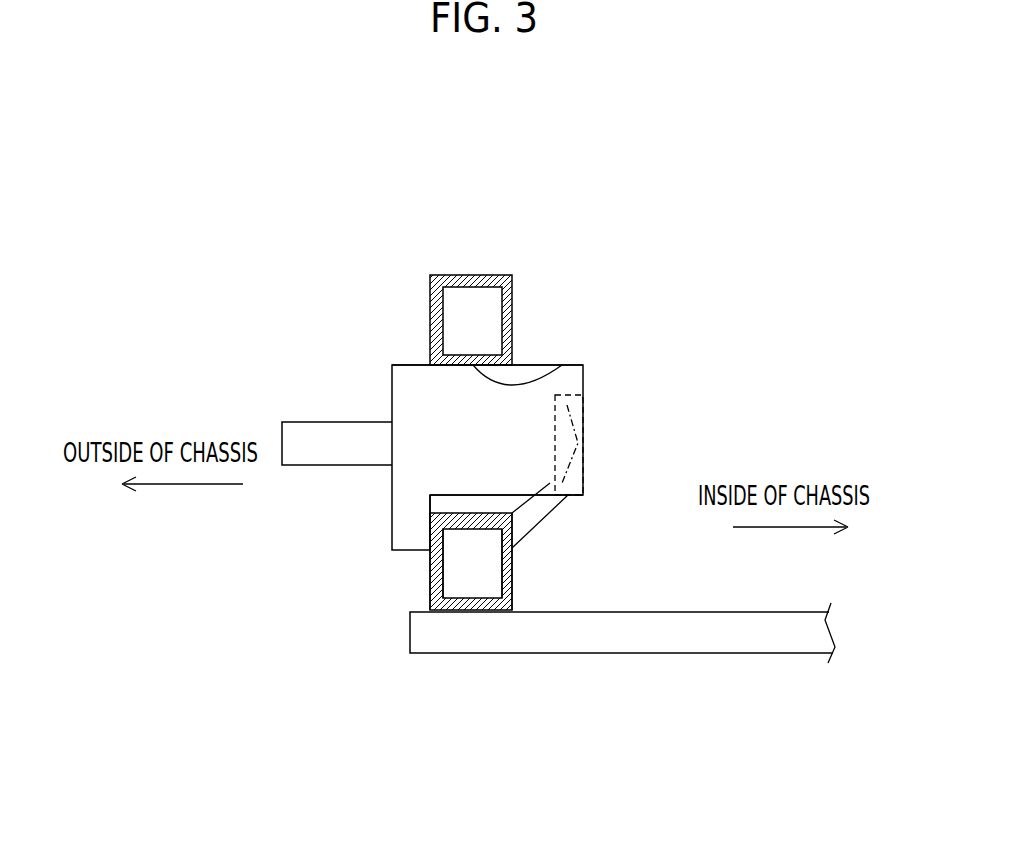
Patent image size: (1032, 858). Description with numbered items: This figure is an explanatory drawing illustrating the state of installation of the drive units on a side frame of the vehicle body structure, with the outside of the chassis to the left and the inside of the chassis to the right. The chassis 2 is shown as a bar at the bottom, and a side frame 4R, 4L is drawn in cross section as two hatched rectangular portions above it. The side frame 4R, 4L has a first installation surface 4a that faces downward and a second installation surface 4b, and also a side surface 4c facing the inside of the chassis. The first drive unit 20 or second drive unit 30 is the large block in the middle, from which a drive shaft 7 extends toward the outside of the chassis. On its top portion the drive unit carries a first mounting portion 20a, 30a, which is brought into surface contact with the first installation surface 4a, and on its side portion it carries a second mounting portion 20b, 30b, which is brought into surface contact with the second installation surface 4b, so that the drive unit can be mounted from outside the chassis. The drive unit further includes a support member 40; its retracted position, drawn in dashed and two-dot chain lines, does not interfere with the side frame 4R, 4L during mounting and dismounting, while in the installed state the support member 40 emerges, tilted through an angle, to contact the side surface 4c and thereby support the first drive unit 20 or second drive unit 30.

The chassis 2 is at (702, 647).
The side frame 4R is at (471, 447).
The side frame 4L is at (472, 275).
The first installation surface 4a is at (562, 365).
The second installation surface 4b is at (447, 534).
The side surface 4c is at (512, 566).
The drive shaft 7 is at (327, 432).
The first drive unit 20 is at (412, 383).
The second drive unit 30 is at (352, 364).
The first mounting portion 20a is at (516, 285).
The first mounting portion 30a is at (527, 365).
The second mounting portion 20b is at (385, 513).
The second mounting portion 30b is at (462, 513).
The support member 40 is at (583, 440).